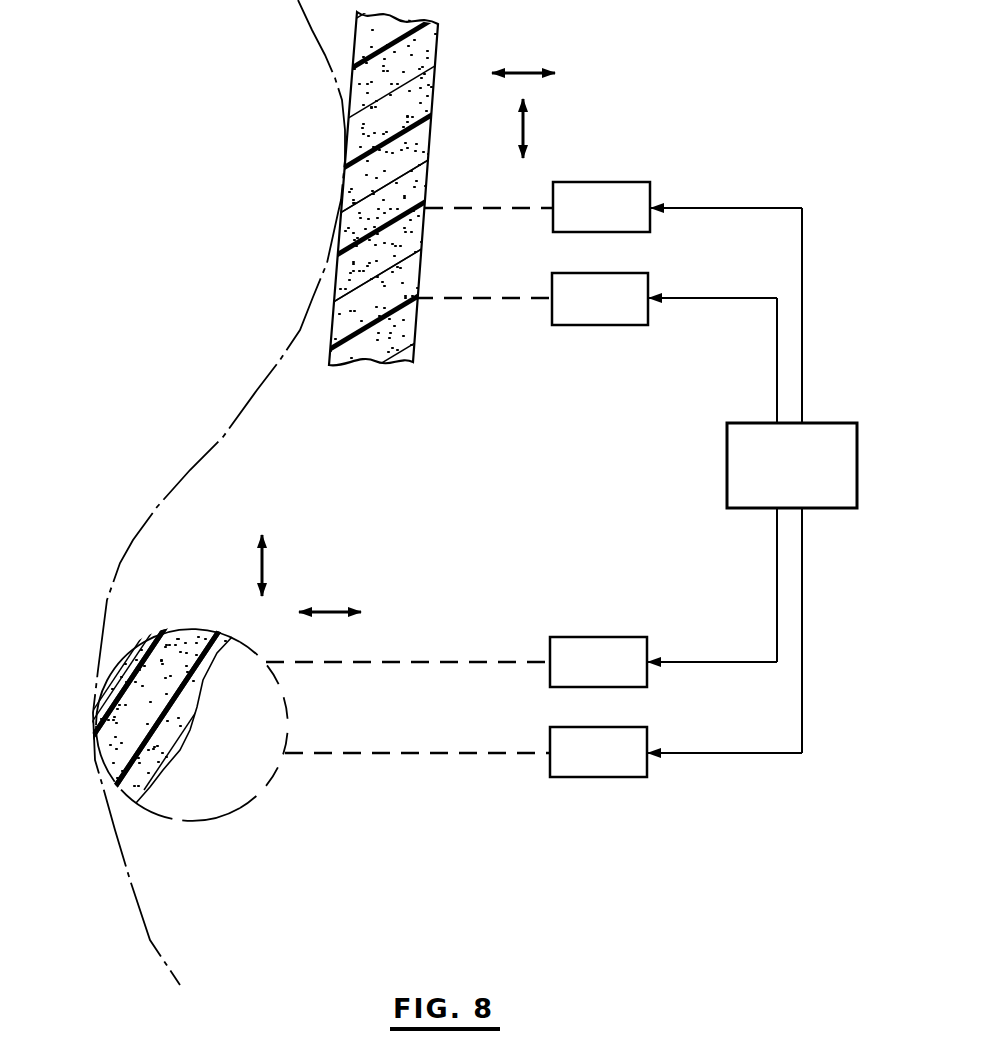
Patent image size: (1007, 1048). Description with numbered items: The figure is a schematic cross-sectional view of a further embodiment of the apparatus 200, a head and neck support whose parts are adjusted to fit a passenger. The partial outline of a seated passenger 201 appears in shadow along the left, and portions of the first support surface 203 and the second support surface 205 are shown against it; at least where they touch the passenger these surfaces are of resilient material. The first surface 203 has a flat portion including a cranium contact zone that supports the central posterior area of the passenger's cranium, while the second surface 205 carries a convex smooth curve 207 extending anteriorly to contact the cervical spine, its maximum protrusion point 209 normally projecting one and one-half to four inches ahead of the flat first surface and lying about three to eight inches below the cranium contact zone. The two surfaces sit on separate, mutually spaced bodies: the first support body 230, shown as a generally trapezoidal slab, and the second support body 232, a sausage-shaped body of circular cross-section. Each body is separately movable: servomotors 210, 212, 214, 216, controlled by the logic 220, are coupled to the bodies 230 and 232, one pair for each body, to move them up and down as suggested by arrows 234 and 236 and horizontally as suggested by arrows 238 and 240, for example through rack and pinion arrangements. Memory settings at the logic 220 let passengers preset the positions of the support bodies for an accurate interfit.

The apparatus 200 is at (673, 141).
The partial outline of a seated passenger 201 is at (258, 388).
The first support surface 203 is at (331, 297).
The second support surface 205 is at (343, 183).
The convex smooth curve 207 is at (107, 683).
The maximum protrusion point 209 is at (97, 727).
The servomotor 210 is at (558, 226).
The servomotor 212 is at (562, 318).
The servomotor 214 is at (577, 645).
The servomotor 216 is at (573, 770).
The logic 220 is at (840, 428).
The first support body 230 is at (424, 341).
The second support body 232 is at (191, 831).
The arrow 234 is at (530, 127).
The arrow 236 is at (268, 566).
The arrow 238 is at (522, 70).
The arrow 240 is at (330, 610).